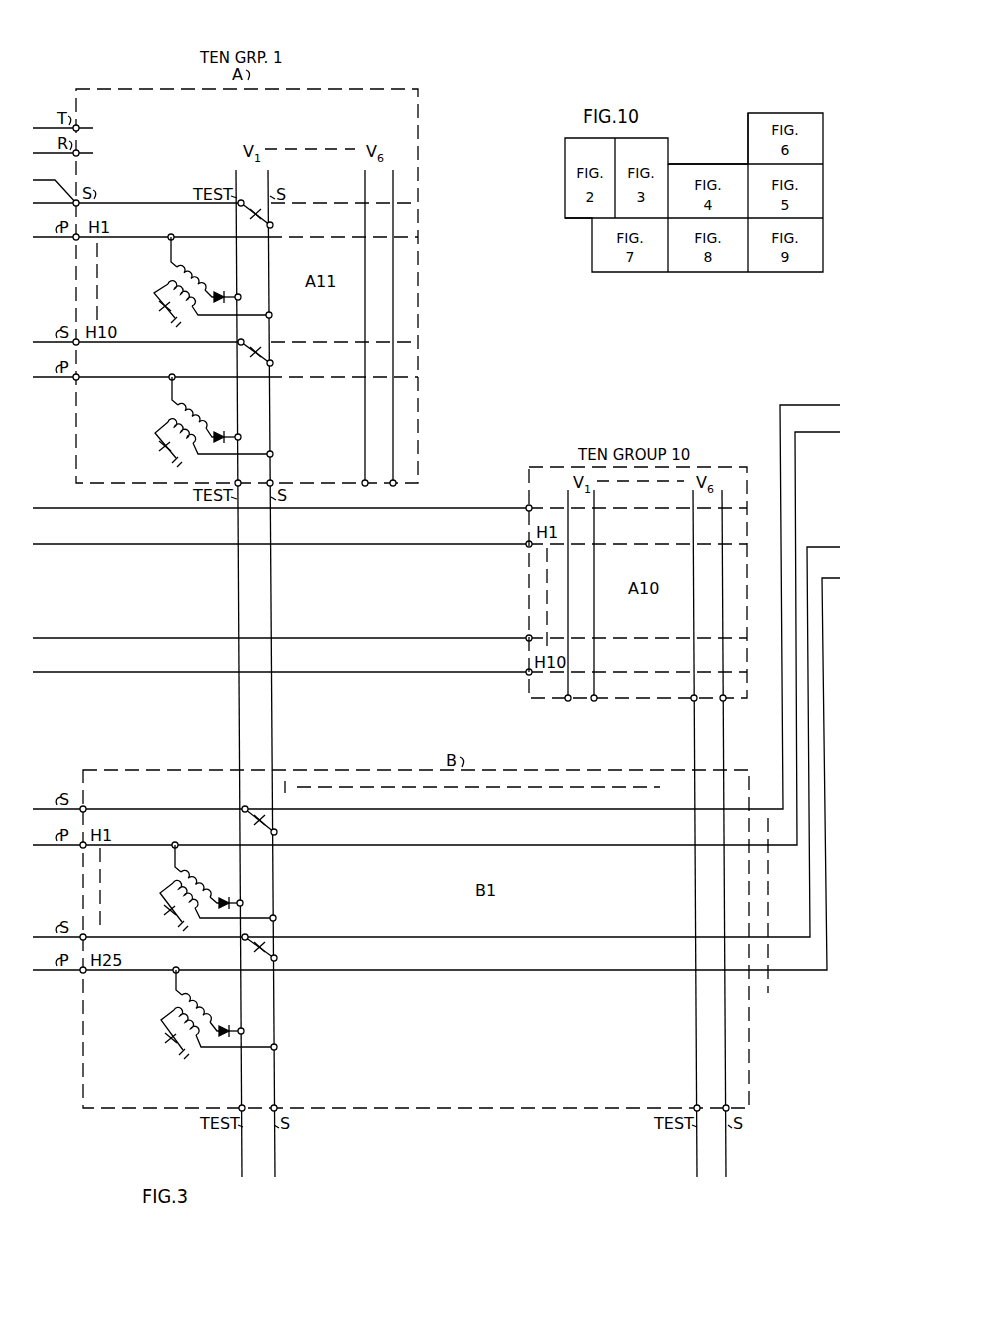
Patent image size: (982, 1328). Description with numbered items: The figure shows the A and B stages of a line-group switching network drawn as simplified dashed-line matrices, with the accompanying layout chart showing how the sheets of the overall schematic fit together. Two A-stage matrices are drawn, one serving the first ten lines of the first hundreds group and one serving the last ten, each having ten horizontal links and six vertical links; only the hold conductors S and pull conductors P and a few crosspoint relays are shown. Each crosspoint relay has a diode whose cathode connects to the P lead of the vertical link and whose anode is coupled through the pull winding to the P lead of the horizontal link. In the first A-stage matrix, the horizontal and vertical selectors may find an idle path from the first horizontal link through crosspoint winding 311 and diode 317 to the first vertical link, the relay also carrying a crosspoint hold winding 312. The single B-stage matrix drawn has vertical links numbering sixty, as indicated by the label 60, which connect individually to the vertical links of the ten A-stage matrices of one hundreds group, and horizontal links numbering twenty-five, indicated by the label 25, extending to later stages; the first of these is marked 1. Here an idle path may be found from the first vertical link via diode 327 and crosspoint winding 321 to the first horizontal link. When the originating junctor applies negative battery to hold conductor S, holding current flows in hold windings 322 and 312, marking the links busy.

The crosspoint winding 311 is at (186, 270).
The crosspoint hold winding 312 is at (169, 281).
The diode 317 is at (223, 292).
The crosspoint winding 321 is at (191, 875).
The crosspoint hold winding 322 is at (172, 886).
The diode 327 is at (228, 897).
The test lead 60 is at (485, 787).
The sleeve lead 1 is at (770, 796).
The horizontal lead 25 is at (767, 905).